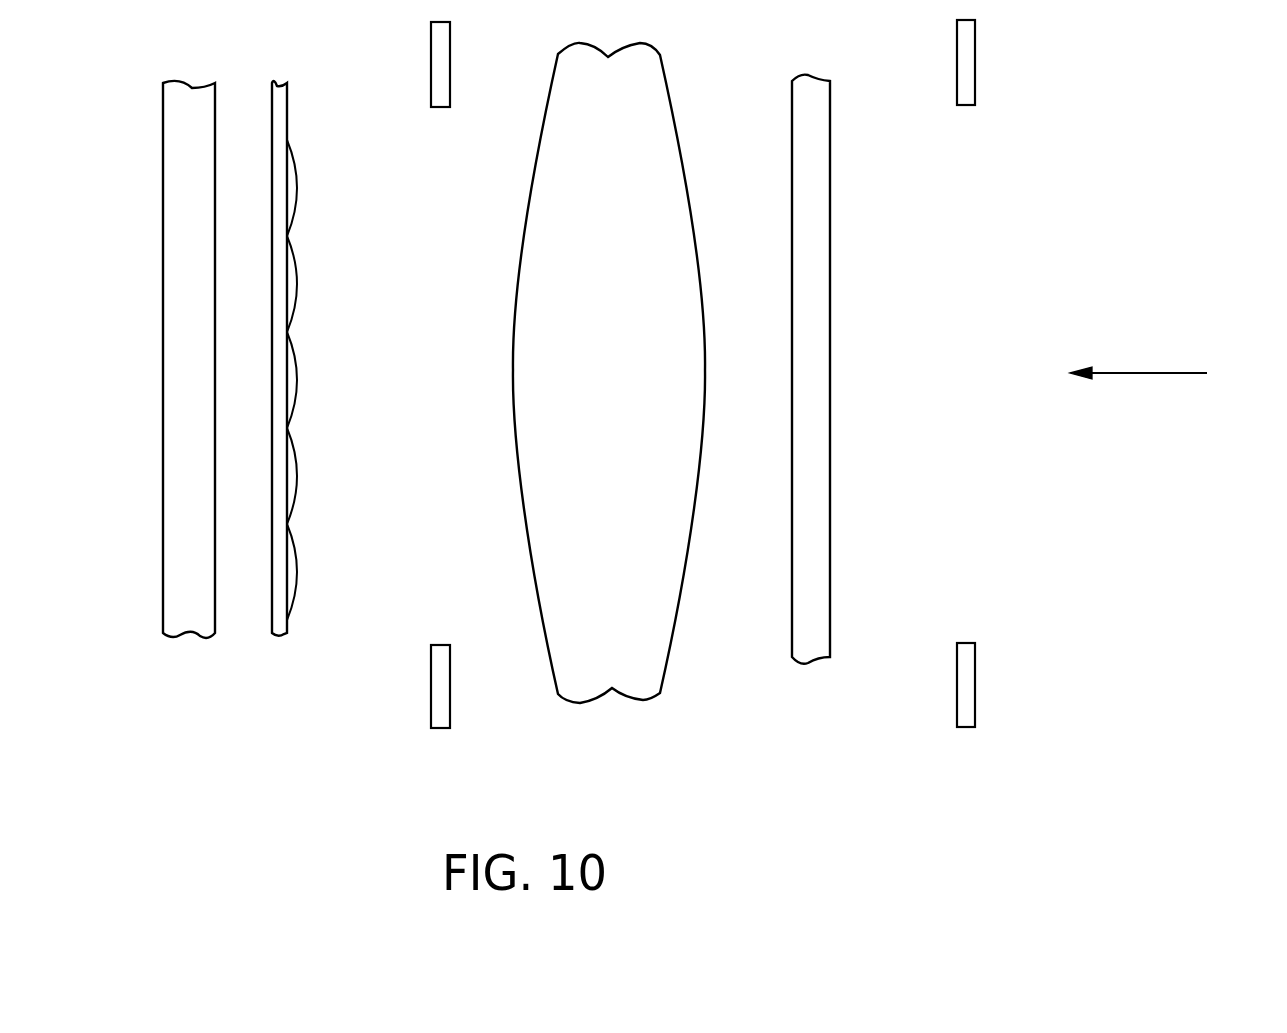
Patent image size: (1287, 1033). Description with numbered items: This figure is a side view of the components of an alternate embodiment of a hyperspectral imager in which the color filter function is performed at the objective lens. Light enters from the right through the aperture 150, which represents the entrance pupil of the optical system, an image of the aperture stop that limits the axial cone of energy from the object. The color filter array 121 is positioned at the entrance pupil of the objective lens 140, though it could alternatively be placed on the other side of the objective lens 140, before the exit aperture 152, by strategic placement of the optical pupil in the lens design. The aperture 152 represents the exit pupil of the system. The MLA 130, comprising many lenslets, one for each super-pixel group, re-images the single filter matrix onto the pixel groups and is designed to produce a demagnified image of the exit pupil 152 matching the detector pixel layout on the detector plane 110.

The substrate / light guide plate 110 is at (198, 633).
The MLA 130 is at (285, 633).
The objective lens 140 is at (623, 697).
The color filter array 121 is at (818, 657).
The aperture 152 is at (440, 107).
The aperture 150 is at (967, 105).